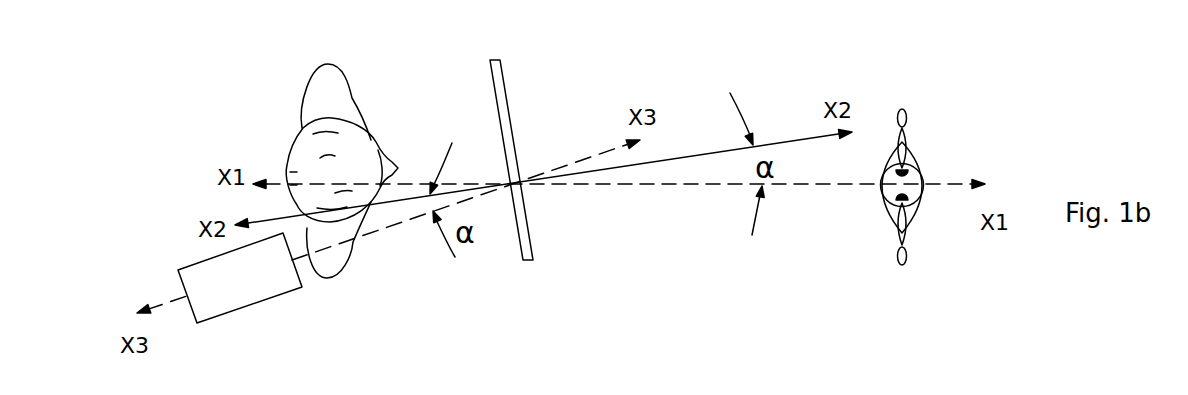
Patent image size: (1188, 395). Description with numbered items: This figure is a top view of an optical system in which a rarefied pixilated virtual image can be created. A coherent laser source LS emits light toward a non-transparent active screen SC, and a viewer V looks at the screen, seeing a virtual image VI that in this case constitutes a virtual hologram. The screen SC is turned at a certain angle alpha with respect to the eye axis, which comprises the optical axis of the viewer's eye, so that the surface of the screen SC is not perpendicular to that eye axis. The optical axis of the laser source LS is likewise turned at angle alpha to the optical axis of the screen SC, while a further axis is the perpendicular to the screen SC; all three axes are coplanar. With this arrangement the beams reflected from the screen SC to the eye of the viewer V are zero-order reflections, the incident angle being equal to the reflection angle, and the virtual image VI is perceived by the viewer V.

The coherent laser source LS is at (202, 260).
The viewer V is at (344, 113).
The non-transparent active screen SC is at (503, 80).
The virtual image VI is at (922, 163).